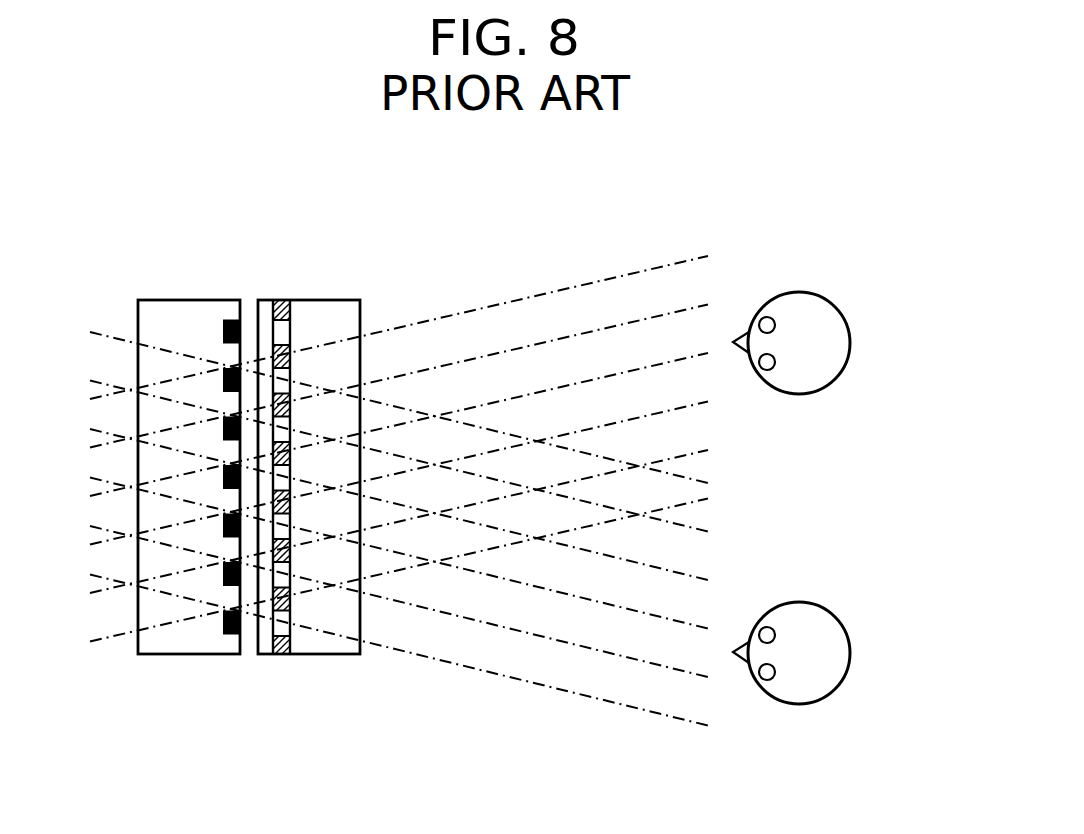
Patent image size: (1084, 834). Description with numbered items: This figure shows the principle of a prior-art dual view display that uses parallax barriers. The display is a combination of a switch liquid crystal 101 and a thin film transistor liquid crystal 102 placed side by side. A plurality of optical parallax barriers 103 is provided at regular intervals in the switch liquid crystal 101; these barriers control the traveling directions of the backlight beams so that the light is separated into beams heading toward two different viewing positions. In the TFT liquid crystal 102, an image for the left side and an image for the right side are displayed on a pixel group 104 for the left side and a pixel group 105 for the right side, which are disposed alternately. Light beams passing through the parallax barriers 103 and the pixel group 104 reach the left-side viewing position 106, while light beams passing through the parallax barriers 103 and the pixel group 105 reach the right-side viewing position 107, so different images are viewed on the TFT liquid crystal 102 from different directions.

The switch liquid crystal 101 is at (167, 299).
The thin film transistor (TFT) liquid crystal 102 is at (325, 655).
The optical parallax barriers 103 is at (223, 327).
The pixel group for the left side 104 is at (263, 628).
The pixel group for the right side 105 is at (287, 630).
The left-side viewing position 106 is at (851, 650).
The right-side viewing position 107 is at (851, 340).